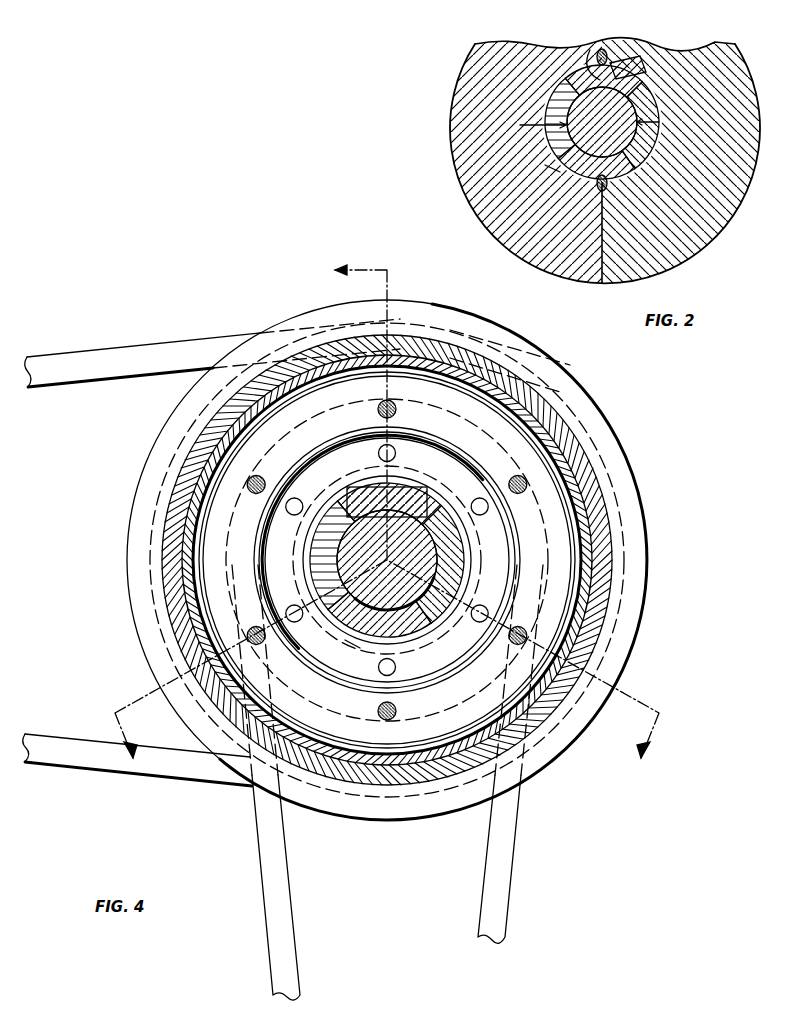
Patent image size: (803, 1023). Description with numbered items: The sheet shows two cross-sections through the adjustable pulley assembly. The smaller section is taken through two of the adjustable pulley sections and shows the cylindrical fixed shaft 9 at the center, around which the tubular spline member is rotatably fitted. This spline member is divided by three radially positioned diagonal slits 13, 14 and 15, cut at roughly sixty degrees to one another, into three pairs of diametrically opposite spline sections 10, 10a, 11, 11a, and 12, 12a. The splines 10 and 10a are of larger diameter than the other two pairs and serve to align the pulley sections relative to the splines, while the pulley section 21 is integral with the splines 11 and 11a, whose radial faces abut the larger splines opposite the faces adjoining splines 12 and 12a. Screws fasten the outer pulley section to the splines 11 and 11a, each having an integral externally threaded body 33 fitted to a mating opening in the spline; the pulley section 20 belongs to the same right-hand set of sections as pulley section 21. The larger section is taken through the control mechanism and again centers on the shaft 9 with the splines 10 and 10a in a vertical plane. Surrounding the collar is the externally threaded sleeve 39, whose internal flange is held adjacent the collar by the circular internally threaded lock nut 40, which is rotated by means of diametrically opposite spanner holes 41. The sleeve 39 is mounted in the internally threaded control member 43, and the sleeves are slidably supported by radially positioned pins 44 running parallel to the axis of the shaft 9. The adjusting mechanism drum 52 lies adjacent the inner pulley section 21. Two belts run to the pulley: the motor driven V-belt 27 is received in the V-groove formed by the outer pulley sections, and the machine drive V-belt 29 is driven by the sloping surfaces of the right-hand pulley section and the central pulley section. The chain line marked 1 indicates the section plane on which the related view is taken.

In FIG. 2, the fixed shaft 9 is at (650, 158).
In FIG. 4, the fixed shaft 9 is at (338, 626).
In FIG. 2, the spline section 10 is at (620, 62).
In FIG. 4, the spline section 10 is at (430, 487).
In FIG. 2, the spline section 10a is at (598, 188).
In FIG. 4, the spline section 10a is at (356, 650).
In FIG. 2, the spline section 11 is at (548, 140).
In FIG. 4, the spline section 11 is at (322, 568).
In FIG. 2, the spline section 11a is at (662, 100).
In FIG. 4, the spline section 11a is at (452, 530).
In FIG. 2, the spline section 12 is at (556, 102).
In FIG. 4, the spline section 12 is at (316, 532).
In FIG. 2, the spline section 12a is at (658, 138).
In FIG. 4, the spline section 12a is at (436, 617).
In FIG. 2, the diagonal slit 13 is at (590, 50).
In FIG. 2, the diagonal slit 14 is at (525, 127).
In FIG. 2, the diagonal slit 15 is at (565, 172).
In FIG. 2, the pulley section 20 is at (458, 85).
In FIG. 2, the pulley section 21 is at (704, 252).
In FIG. 4, the motor driven V-belt 27 is at (513, 850).
In FIG. 4, the machine drive V-belt 29 is at (86, 355).
In FIG. 2, the externally threaded body 33 is at (596, 62).
In FIG. 4, the externally threaded sleeve 39 is at (288, 470).
In FIG. 4, the lock nut 40 is at (470, 480).
In FIG. 4, the spanner holes 41 is at (374, 677).
In FIG. 4, the control member 43 is at (470, 725).
In FIG. 4, the pins 44 is at (397, 716).
In FIG. 4, the drum 52 is at (402, 797).
In FIG. 4, the section line 1- 1 is at (387, 502).